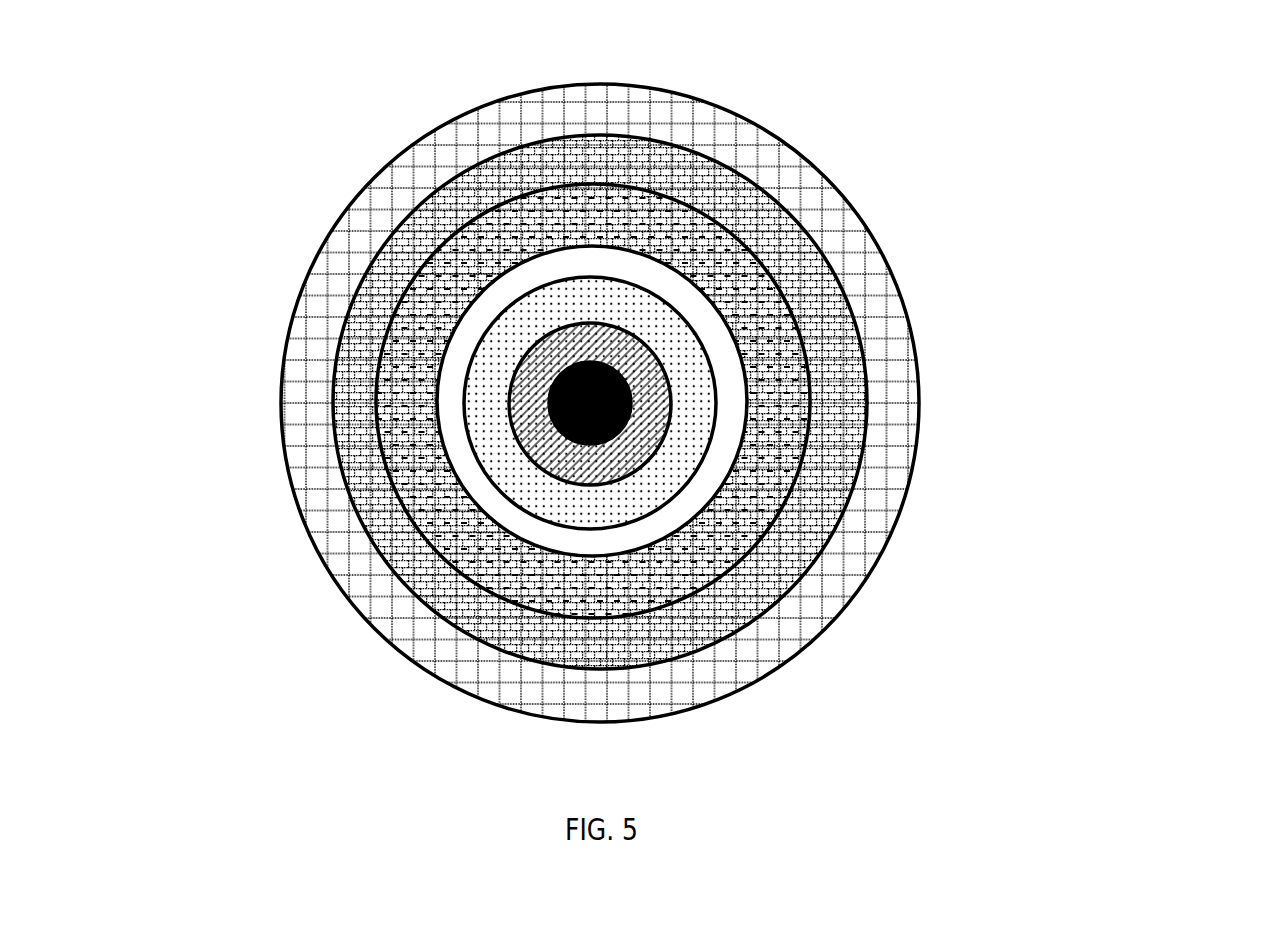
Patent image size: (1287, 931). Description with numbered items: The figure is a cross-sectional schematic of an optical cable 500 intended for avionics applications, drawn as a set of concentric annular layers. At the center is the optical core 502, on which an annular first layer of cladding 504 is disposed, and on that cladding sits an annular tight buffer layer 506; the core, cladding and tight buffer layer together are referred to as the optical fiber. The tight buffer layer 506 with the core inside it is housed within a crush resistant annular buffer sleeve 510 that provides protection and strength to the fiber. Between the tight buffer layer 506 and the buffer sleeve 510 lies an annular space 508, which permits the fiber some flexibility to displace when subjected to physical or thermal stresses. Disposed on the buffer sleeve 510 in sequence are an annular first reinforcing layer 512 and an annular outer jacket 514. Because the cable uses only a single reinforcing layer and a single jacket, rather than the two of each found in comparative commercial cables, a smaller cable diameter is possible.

The optical cable 500 is at (278, 126).
The optical core 502 is at (610, 398).
The first layer of cladding 504 is at (655, 383).
The tight buffer layer 506 is at (690, 383).
The annular space 508 is at (740, 407).
The buffer sleeve 510 is at (783, 445).
The first reinforcing layer 512 is at (813, 523).
The outer jacket 514 is at (845, 587).